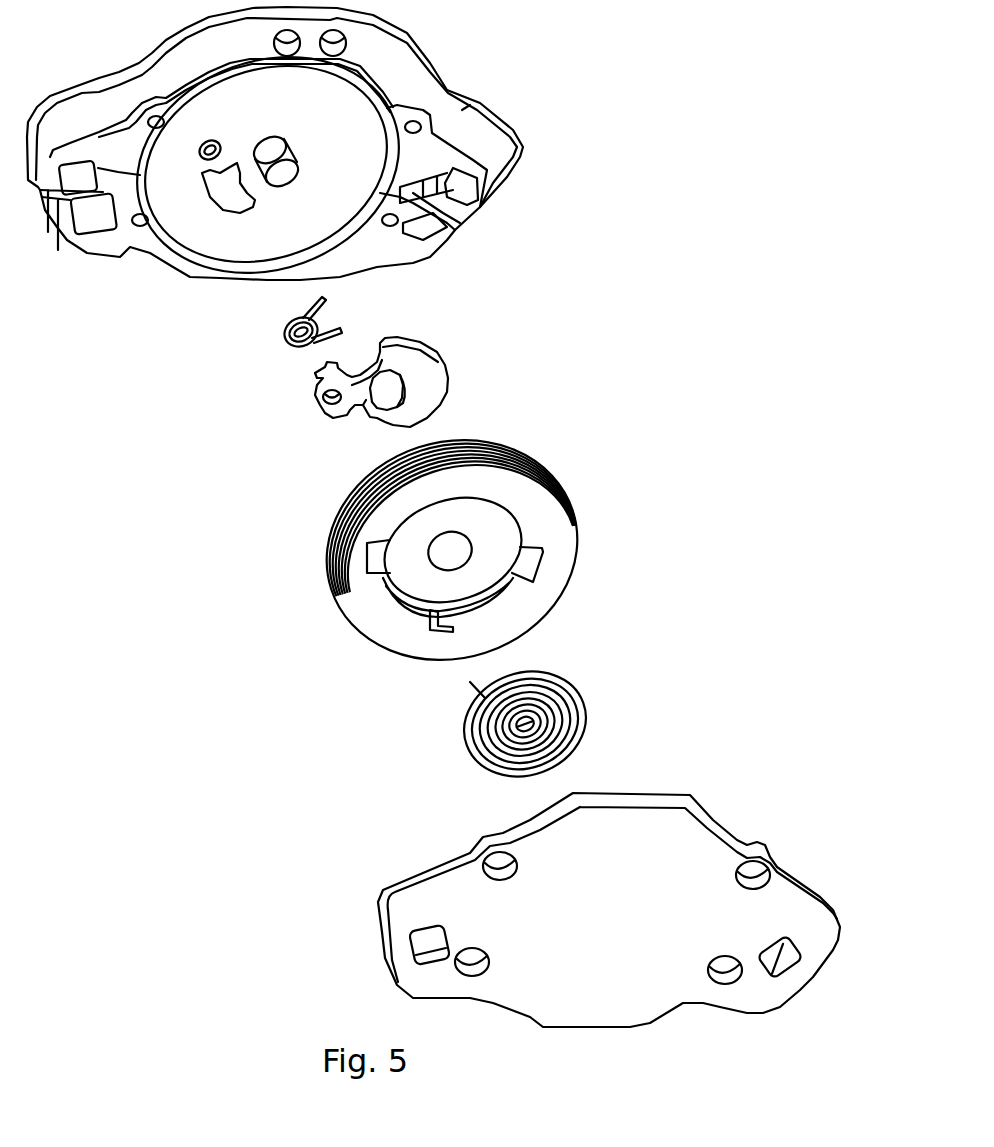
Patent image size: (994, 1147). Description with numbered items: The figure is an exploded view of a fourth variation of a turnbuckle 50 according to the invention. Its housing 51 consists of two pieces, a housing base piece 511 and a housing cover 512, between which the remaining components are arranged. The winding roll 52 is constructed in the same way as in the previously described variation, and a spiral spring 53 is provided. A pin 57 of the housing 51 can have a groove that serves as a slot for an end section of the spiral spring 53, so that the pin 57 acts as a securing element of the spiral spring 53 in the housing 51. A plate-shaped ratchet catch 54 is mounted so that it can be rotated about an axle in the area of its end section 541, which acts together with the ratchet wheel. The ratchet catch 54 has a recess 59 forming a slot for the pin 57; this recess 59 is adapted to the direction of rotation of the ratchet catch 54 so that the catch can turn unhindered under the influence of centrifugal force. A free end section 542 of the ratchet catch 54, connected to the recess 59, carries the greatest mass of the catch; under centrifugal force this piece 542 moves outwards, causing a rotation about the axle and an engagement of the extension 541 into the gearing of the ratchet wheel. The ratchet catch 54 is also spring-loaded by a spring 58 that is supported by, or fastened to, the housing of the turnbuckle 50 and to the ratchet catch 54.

The turnbuckle 50 is at (632, 139).
The housing 51 is at (447, 56).
The housing base piece 511 is at (460, 113).
The housing cover 512 is at (452, 905).
The winding roll 52 is at (537, 517).
The spiral spring 53 is at (573, 690).
The ratchet catch 54 is at (449, 358).
The end section 541 is at (323, 412).
The free end section 542 is at (427, 387).
The pin 57 is at (277, 160).
The spring 58 is at (280, 333).
The recess 59 is at (387, 390).